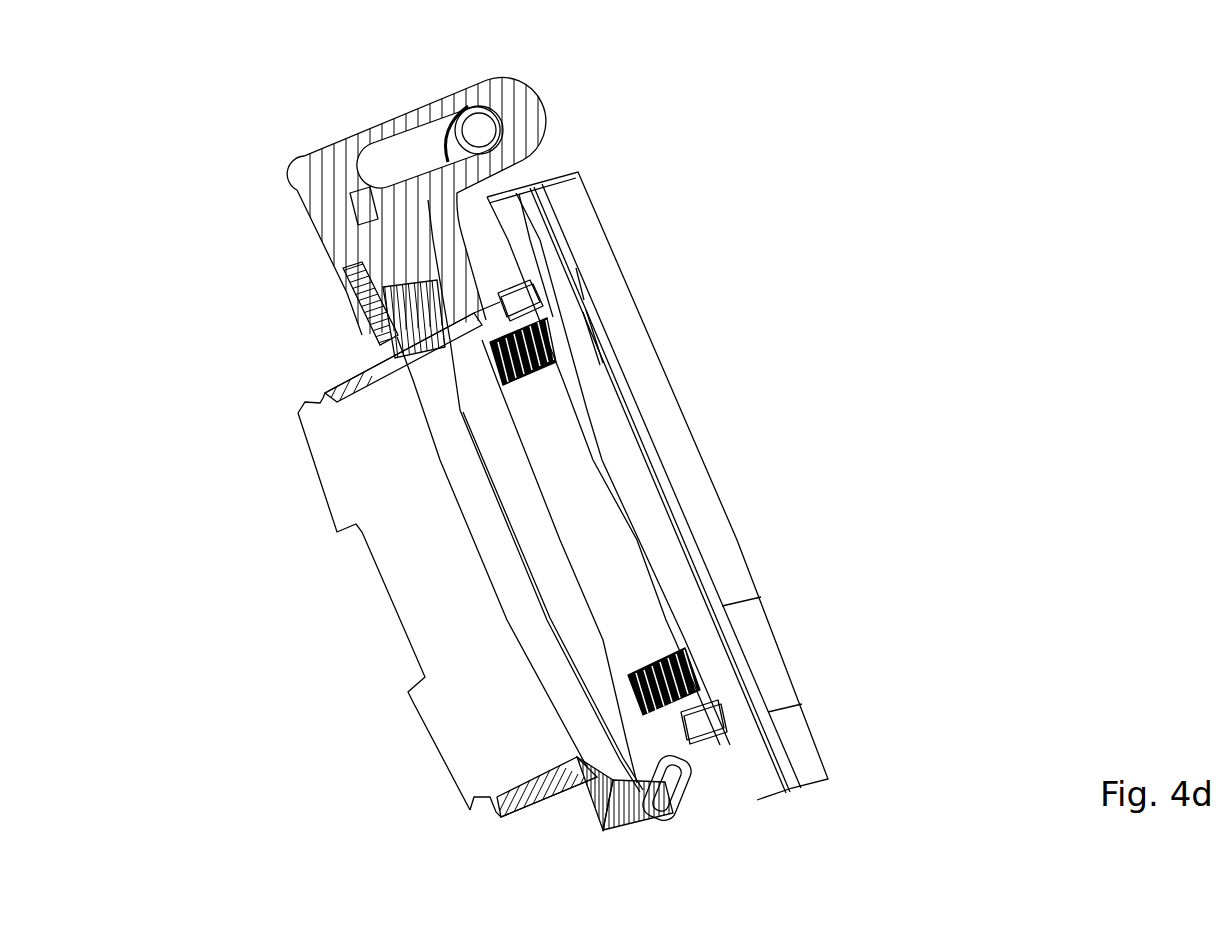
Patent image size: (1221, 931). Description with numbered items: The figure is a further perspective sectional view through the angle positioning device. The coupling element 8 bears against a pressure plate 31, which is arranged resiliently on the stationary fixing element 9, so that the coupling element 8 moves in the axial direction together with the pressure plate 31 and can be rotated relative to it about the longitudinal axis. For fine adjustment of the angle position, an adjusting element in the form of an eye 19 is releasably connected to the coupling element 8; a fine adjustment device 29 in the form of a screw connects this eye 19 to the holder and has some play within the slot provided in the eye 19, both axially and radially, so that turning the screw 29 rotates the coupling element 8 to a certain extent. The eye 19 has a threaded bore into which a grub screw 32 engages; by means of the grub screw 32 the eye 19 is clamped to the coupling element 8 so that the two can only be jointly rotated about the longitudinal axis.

The coupling element 8 is at (620, 833).
The fixing element 9 is at (690, 425).
The eye 19 is at (436, 184).
The fine adjustment device 29 is at (480, 130).
The pressure plate 31 is at (697, 793).
The grub screw 32 is at (367, 213).